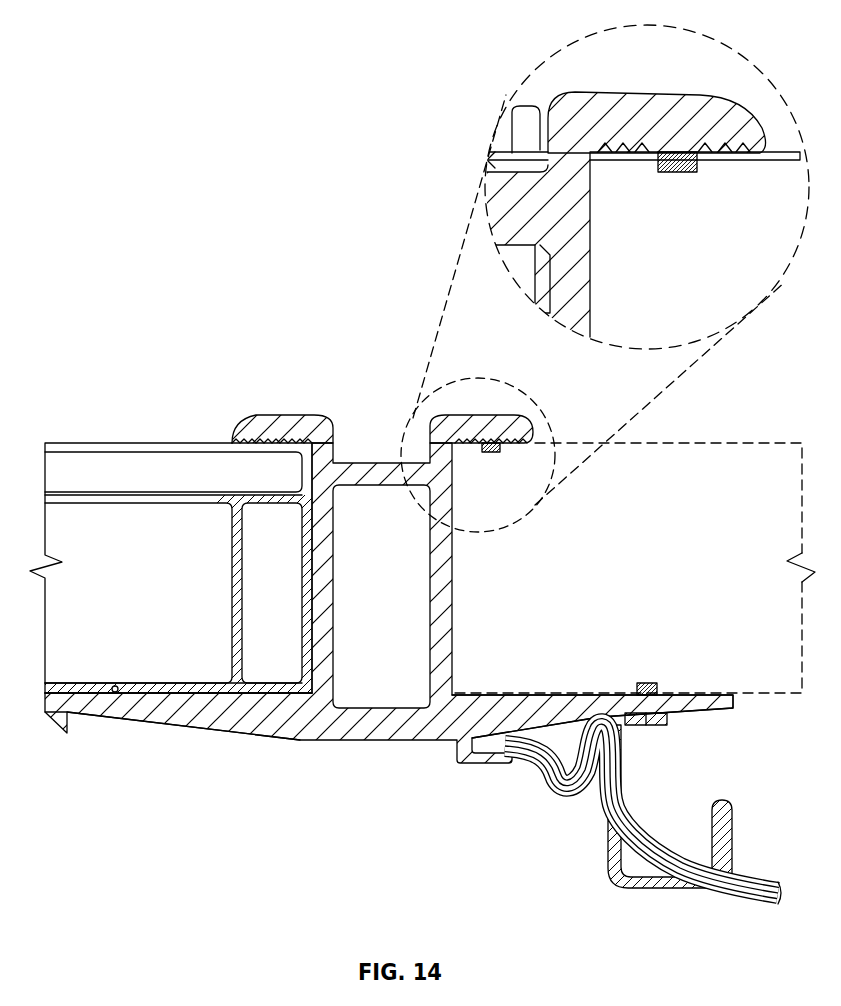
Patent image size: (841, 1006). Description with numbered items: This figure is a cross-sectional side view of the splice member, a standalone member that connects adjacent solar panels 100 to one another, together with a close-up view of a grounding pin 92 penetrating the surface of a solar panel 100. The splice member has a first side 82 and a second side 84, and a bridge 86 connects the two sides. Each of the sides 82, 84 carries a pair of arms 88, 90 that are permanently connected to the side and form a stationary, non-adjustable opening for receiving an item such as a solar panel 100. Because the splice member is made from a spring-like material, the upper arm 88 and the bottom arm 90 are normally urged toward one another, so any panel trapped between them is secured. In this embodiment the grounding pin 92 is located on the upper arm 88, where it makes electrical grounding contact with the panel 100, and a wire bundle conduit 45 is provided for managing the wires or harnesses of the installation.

The wire bundle conduit 45 is at (734, 822).
The first side 82 is at (272, 414).
The second side 84 is at (478, 417).
The bridge 86 is at (382, 723).
The upper arm 88 is at (265, 430).
The bottom arm 90 is at (163, 704).
The grounding pin 92 is at (488, 452).
The solar panel 100 is at (155, 442).